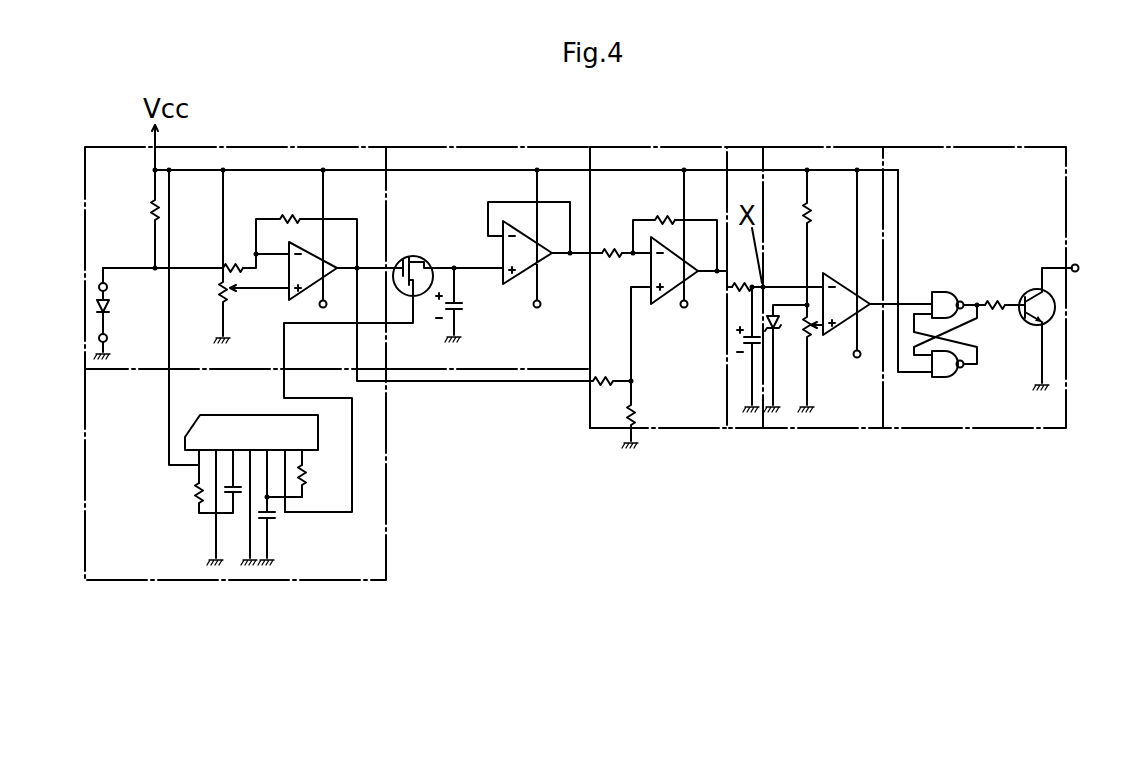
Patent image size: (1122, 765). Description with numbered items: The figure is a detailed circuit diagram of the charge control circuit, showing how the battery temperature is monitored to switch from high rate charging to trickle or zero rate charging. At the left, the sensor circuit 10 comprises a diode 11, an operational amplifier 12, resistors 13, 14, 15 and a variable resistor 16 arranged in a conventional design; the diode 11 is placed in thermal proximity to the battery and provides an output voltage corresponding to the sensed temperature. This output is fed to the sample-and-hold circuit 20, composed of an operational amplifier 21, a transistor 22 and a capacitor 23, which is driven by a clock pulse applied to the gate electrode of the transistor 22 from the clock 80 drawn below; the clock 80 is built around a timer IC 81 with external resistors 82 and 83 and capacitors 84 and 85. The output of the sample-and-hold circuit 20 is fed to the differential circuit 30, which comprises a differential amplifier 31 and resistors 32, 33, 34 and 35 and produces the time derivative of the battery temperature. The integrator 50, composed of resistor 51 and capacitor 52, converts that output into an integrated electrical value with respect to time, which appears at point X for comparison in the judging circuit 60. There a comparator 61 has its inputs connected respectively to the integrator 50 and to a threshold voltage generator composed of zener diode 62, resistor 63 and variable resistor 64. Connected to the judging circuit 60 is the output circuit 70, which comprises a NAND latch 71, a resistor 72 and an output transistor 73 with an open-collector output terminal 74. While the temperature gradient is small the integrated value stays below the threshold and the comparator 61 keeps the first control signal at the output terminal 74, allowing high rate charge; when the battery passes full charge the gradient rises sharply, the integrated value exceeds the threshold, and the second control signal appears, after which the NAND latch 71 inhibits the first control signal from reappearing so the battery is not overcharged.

The sensor circuit 10 is at (258, 145).
The diode 11 is at (110, 308).
The operational amplifier 12 is at (289, 291).
The resistor 13 is at (150, 210).
The resistor 14 is at (233, 263).
The resistor 15 is at (290, 215).
The variable resistor 16 is at (218, 292).
The sample-and-hold circuit 20 is at (480, 145).
The operational amplifier 21 is at (507, 286).
The transistor 22 is at (411, 257).
The capacitor 23 is at (461, 305).
The differential circuit 30 is at (707, 145).
The differential amplifier 31 is at (652, 305).
The resistor 32 is at (612, 247).
The resistor 33 is at (658, 216).
The resistor 34 is at (607, 375).
The resistor 35 is at (639, 413).
The integrator 50 is at (755, 145).
The resistor 51 is at (742, 283).
The capacitor 52 is at (744, 341).
The judging circuit 60 is at (837, 145).
The comparator 61 is at (824, 274).
The zener diode 62 is at (776, 313).
The resistor 63 is at (805, 214).
The variable resistor 64 is at (814, 327).
The output circuit 70 is at (958, 145).
The NAND latch 71 is at (940, 291).
The resistor 72 is at (997, 299).
The output transistor 73 is at (1025, 323).
The output terminal 74 is at (1079, 271).
The clock 80 is at (149, 589).
The timer IC 81 is at (252, 414).
The external resistor 82 is at (306, 478).
The external resistor 83 is at (195, 488).
The capacitor 84 is at (276, 519).
The capacitor 85 is at (230, 494).